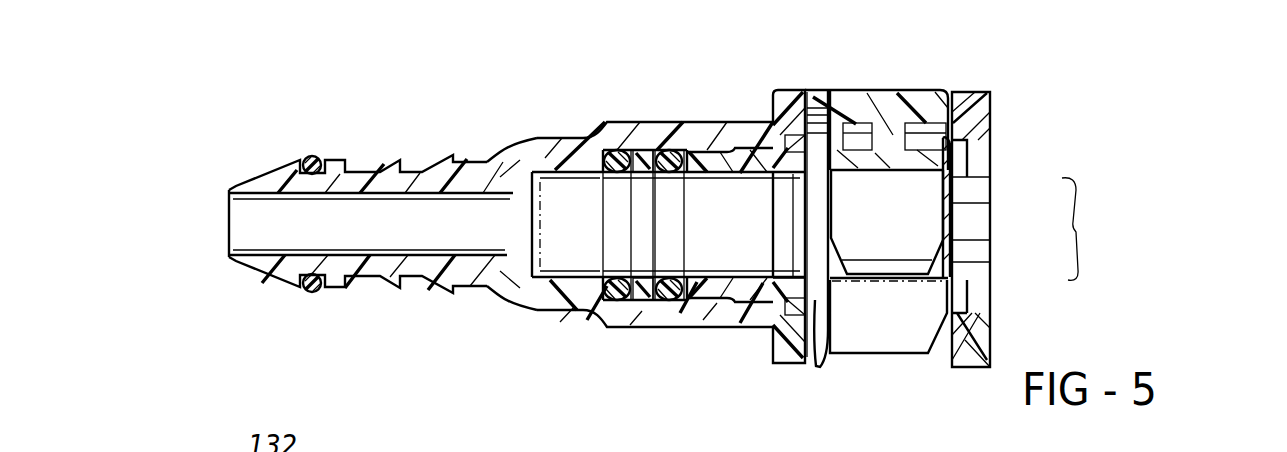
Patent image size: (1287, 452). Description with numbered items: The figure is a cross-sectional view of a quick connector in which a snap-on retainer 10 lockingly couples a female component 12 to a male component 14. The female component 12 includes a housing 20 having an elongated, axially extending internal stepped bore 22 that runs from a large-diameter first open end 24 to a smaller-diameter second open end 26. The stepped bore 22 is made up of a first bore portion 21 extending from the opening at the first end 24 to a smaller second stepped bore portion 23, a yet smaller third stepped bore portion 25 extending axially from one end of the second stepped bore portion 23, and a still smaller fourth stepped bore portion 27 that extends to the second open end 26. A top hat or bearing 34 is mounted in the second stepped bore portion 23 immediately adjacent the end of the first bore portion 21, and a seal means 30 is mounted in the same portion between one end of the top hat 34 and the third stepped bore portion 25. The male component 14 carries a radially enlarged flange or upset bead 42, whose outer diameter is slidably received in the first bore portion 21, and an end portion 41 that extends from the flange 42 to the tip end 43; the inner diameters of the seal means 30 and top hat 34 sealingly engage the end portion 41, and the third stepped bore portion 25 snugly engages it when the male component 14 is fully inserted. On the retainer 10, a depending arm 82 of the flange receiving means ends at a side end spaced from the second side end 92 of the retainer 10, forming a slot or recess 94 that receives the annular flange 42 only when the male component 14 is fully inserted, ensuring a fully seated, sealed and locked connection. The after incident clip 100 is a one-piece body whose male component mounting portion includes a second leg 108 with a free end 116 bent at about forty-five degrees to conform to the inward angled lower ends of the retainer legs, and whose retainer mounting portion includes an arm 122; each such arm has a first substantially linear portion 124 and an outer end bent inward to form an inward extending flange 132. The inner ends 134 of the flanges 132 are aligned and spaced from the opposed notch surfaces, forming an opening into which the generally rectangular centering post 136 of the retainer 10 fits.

The snap-on retainer 10 is at (947, 90).
The female component 12 is at (358, 119).
The male component 14 is at (832, 175).
The housing 20 is at (610, 122).
The first bore portion 21 is at (952, 280).
The stepped bore 22 is at (600, 291).
The second stepped bore portion 23 is at (700, 300).
The first open end 24 is at (990, 313).
The third stepped bore portion 25 is at (583, 268).
The second open end 26 is at (230, 183).
The fourth stepped bore portion 27 is at (262, 198).
The seal means 30 is at (623, 300).
The top hat 34 is at (745, 300).
The end portion 41 is at (690, 150).
The radially enlarged flange 42 is at (818, 367).
The tip end 43 is at (513, 148).
The first depending arm 82 is at (927, 198).
The second side end 92 is at (952, 223).
The slot or recess 94 is at (797, 174).
The after incident clip 100 is at (990, 110).
The second leg 108 is at (952, 203).
The free end 116 is at (952, 266).
The arm 122 is at (860, 123).
The first linear portion 124 is at (913, 137).
The inward extending flange 132 is at (857, 125).
The inner ends 134 is at (398, 442).
The post 136 is at (883, 137).